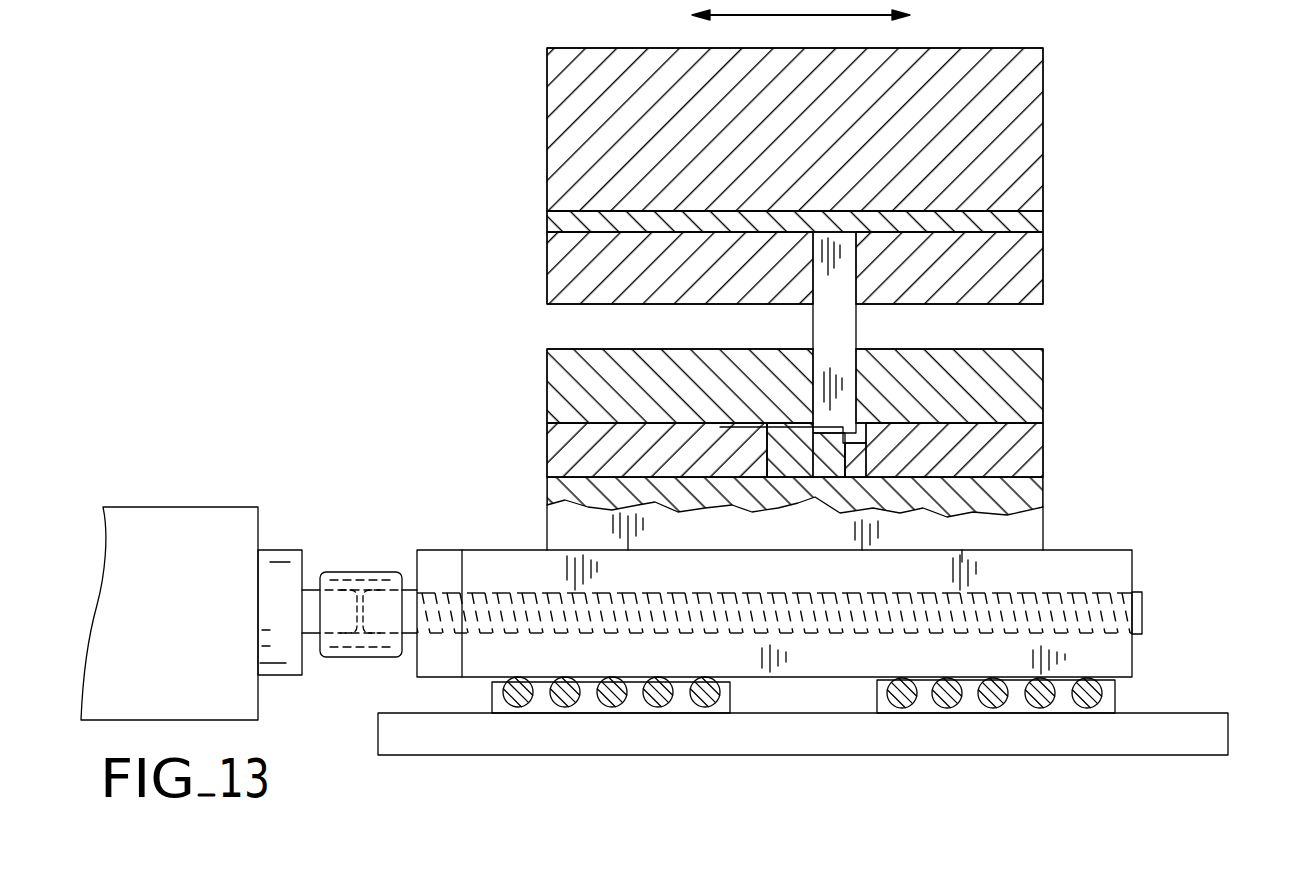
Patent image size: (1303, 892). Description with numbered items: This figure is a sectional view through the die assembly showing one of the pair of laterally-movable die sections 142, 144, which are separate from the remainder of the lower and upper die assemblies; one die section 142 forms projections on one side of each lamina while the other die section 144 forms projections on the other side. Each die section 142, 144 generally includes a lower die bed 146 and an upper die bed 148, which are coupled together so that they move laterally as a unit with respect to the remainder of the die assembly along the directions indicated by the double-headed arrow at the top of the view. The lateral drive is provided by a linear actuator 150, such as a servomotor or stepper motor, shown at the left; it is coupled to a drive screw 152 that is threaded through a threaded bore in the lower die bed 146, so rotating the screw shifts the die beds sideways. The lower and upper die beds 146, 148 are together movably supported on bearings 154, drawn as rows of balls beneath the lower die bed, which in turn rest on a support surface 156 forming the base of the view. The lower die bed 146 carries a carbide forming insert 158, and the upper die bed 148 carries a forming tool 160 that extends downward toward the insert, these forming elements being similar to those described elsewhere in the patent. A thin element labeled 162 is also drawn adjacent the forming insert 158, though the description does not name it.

The die section 142 is at (685, 408).
The die section 144 is at (373, 183).
The lower die bed 146 is at (1027, 493).
The upper die bed 148 is at (1027, 134).
The linear actuator 150 is at (190, 610).
The drive screw 152 is at (508, 593).
The bearings 154 is at (1090, 691).
The support surface 156 is at (1195, 720).
The carbide forming insert 158 is at (818, 459).
The forming tool 160 is at (853, 328).
The thin plate / liner 162 is at (745, 424).